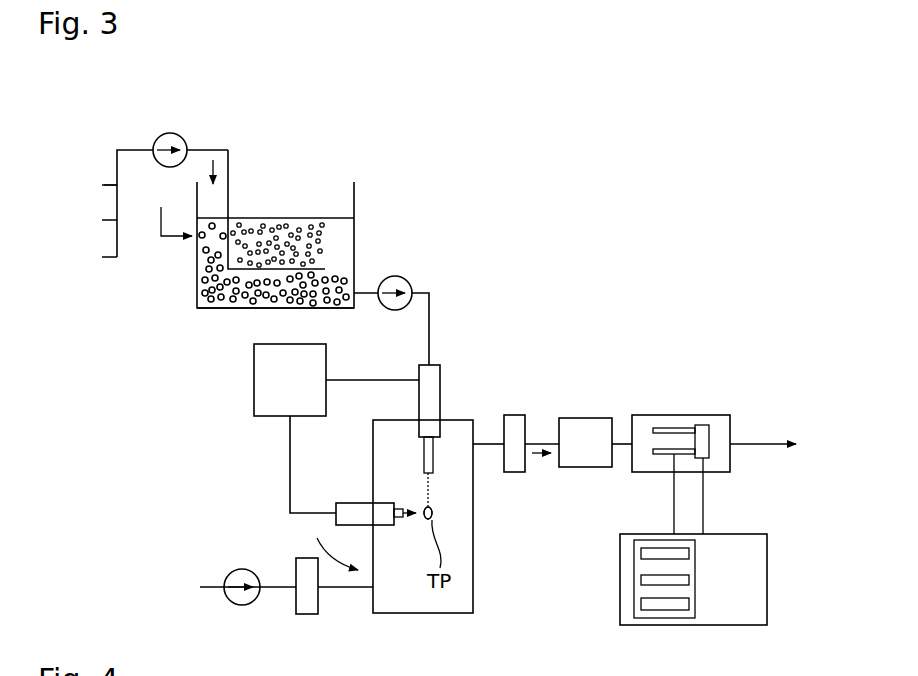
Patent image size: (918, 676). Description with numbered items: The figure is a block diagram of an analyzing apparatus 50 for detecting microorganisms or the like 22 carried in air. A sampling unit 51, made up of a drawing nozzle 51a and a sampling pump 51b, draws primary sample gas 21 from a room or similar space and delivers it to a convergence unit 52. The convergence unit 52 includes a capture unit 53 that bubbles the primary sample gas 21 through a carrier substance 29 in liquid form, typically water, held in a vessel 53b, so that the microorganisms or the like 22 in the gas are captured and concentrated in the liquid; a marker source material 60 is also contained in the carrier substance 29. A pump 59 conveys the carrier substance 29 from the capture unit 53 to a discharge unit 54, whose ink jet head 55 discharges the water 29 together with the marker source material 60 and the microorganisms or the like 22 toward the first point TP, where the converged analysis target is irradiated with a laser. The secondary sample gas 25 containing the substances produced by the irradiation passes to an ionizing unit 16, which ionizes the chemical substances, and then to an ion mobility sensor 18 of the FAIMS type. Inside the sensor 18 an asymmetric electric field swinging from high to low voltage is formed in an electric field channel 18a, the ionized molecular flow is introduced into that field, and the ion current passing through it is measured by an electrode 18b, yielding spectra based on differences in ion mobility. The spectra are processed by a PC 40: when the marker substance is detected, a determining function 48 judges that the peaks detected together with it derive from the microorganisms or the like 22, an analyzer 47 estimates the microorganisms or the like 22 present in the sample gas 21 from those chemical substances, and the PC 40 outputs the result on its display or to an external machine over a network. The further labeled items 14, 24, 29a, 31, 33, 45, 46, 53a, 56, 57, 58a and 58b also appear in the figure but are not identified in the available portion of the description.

The detection unit 14 is at (513, 425).
The ionizing unit 16 is at (573, 425).
The ion mobility sensor 18 is at (668, 415).
The electric field channel 18a is at (660, 428).
The electrode 18b is at (703, 428).
The primary sample gas 21 is at (220, 171).
The microorganisms or the like 22 is at (290, 218).
The gas flow 24 is at (331, 543).
The secondary sample gas 25 is at (545, 458).
The carrier substance 29 is at (336, 222).
The bubble 29a is at (435, 515).
The droplet 31 is at (414, 513).
The laser irradiation unit 33 is at (348, 503).
The PC 40 is at (738, 550).
The processor 45 is at (641, 542).
The first calculation unit 46 is at (647, 553).
The analyzer 47 is at (647, 580).
The determining function 48 is at (647, 604).
The analyzing apparatus 50 is at (513, 163).
The sampling unit 51 is at (229, 122).
The drawing nozzle 51a is at (111, 184).
The sampling pump 51b is at (170, 133).
The convergence unit 52 is at (420, 172).
The capture unit 53 is at (196, 339).
The liquid inlet 53a is at (168, 240).
The vessel 53b is at (196, 300).
The discharge unit 54 is at (432, 388).
The ink jet head 55 is at (433, 462).
The drive controller 56 is at (318, 367).
The measurement chamber 57 is at (473, 565).
The carrier gas pump 58a is at (238, 572).
The filter 58b is at (308, 615).
The pump 59 is at (412, 283).
The marker source material 60 is at (340, 273).